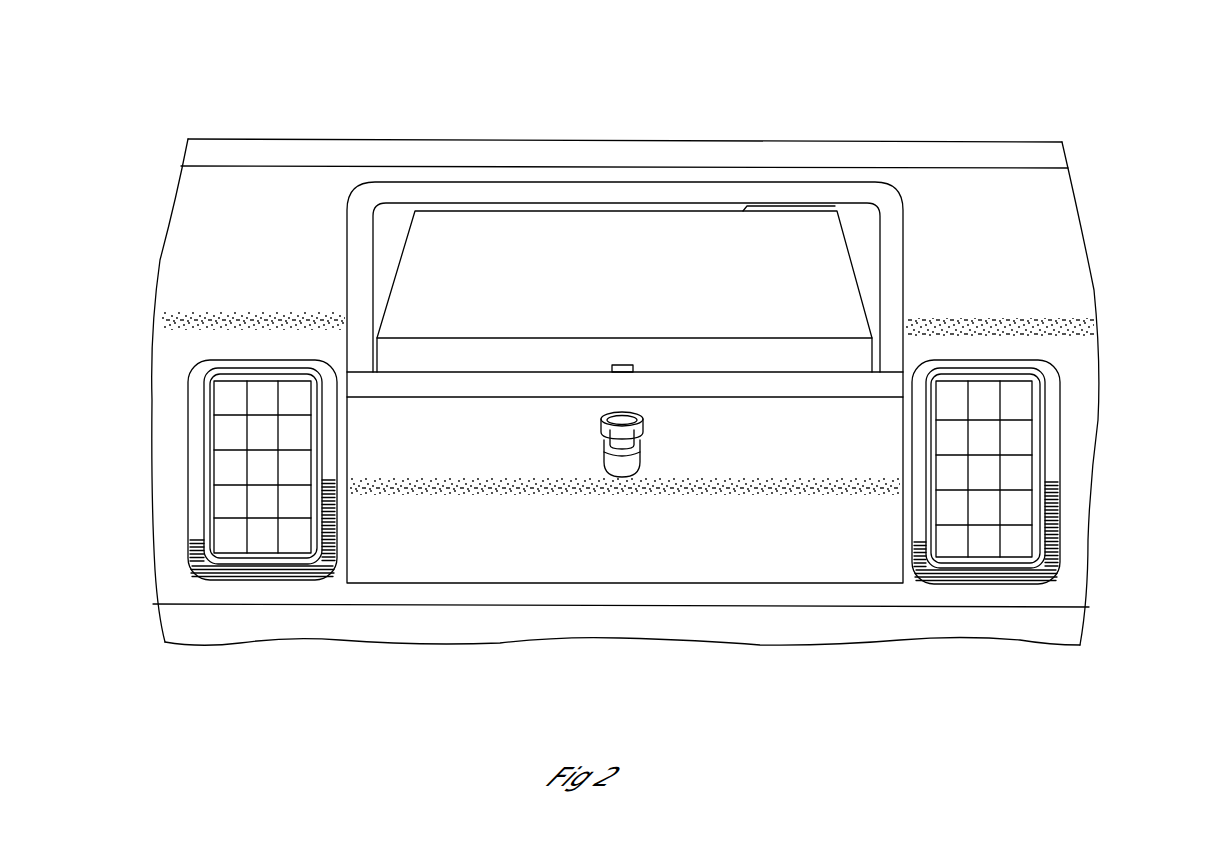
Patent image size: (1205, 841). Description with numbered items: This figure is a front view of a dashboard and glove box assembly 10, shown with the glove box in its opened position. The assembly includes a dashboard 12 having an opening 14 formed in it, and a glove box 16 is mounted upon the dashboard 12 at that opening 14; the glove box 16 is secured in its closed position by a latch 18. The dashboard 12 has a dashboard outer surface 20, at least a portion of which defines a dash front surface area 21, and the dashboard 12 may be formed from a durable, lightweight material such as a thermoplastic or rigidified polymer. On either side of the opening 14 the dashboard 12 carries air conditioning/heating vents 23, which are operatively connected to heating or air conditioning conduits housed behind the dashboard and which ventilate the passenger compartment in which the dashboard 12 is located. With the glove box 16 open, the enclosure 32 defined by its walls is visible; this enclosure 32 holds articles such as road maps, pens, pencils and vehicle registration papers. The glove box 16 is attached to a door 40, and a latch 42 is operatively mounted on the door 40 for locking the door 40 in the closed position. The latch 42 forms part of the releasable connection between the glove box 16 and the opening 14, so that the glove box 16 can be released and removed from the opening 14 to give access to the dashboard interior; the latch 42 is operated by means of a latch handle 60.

The dashboard and glove box assembly 10 is at (302, 64).
The dashboard 12 is at (400, 152).
The opening 14 is at (390, 205).
The glove box 16 is at (320, 243).
The latch 18 is at (636, 471).
The dashboard outer surface 20 is at (968, 192).
The dash front surface area 21 is at (979, 273).
The air conditioning/heating vents 23 is at (205, 432).
The enclosure 32 is at (506, 326).
The door 40 is at (633, 555).
The latch 42 is at (652, 413).
The latch handle 60 is at (617, 466).